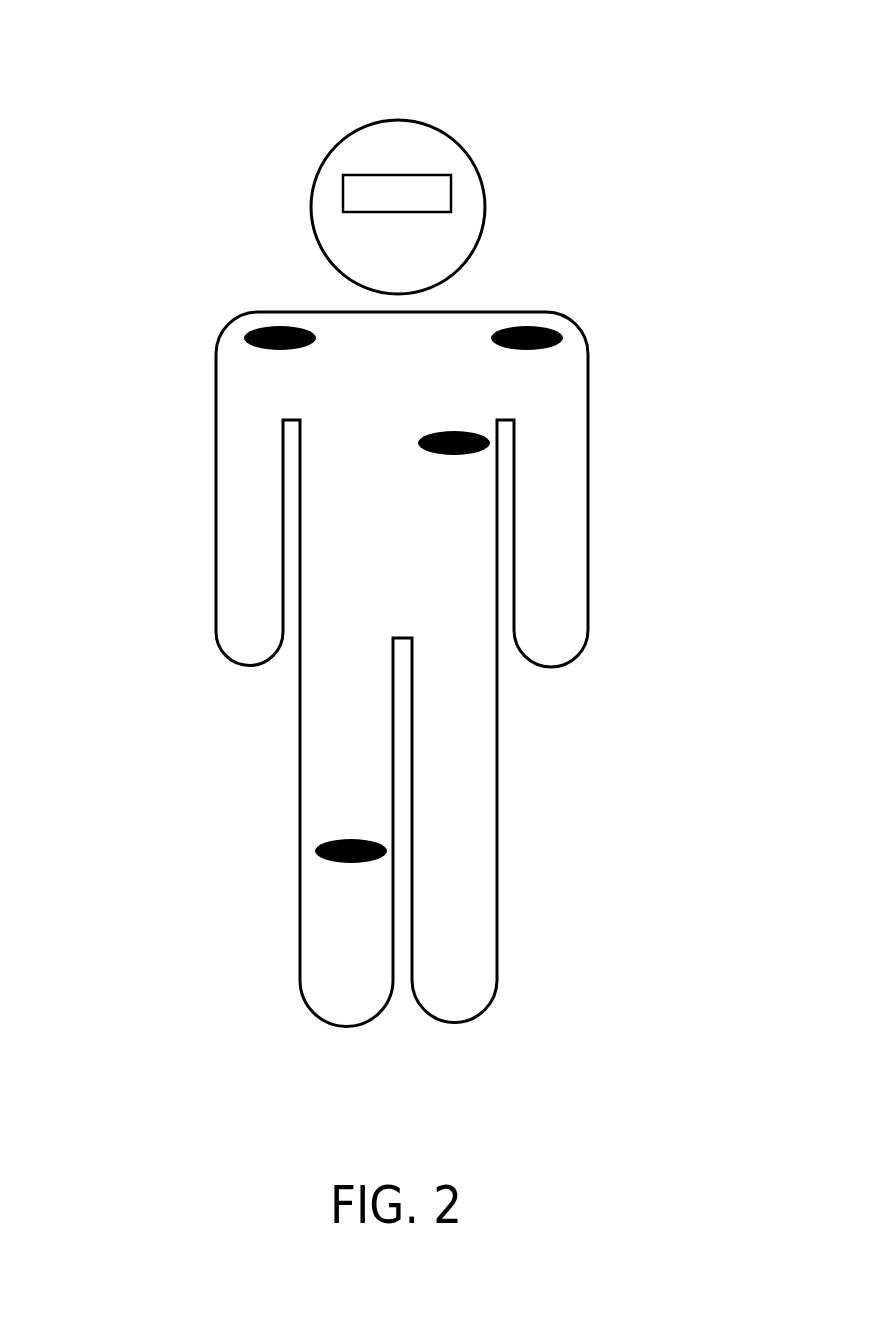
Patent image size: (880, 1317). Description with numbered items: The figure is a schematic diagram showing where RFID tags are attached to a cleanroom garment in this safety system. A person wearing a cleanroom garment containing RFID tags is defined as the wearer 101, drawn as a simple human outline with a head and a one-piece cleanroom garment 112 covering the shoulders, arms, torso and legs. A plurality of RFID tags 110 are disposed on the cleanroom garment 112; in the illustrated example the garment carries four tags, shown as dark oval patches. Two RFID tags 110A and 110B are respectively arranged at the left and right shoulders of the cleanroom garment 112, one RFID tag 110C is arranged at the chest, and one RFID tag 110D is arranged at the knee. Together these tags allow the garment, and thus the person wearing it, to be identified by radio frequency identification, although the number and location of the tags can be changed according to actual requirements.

The person wearing cleanroom garment containing RFID tags 101 is at (190, 68).
The cleanroom garment 112 is at (267, 712).
The RFID tags 110 is at (435, 550).
The RFID tag 110A is at (278, 328).
The RFID tag 110B is at (527, 332).
The RFID tag 110C is at (464, 455).
The RFID tag 110D is at (325, 846).